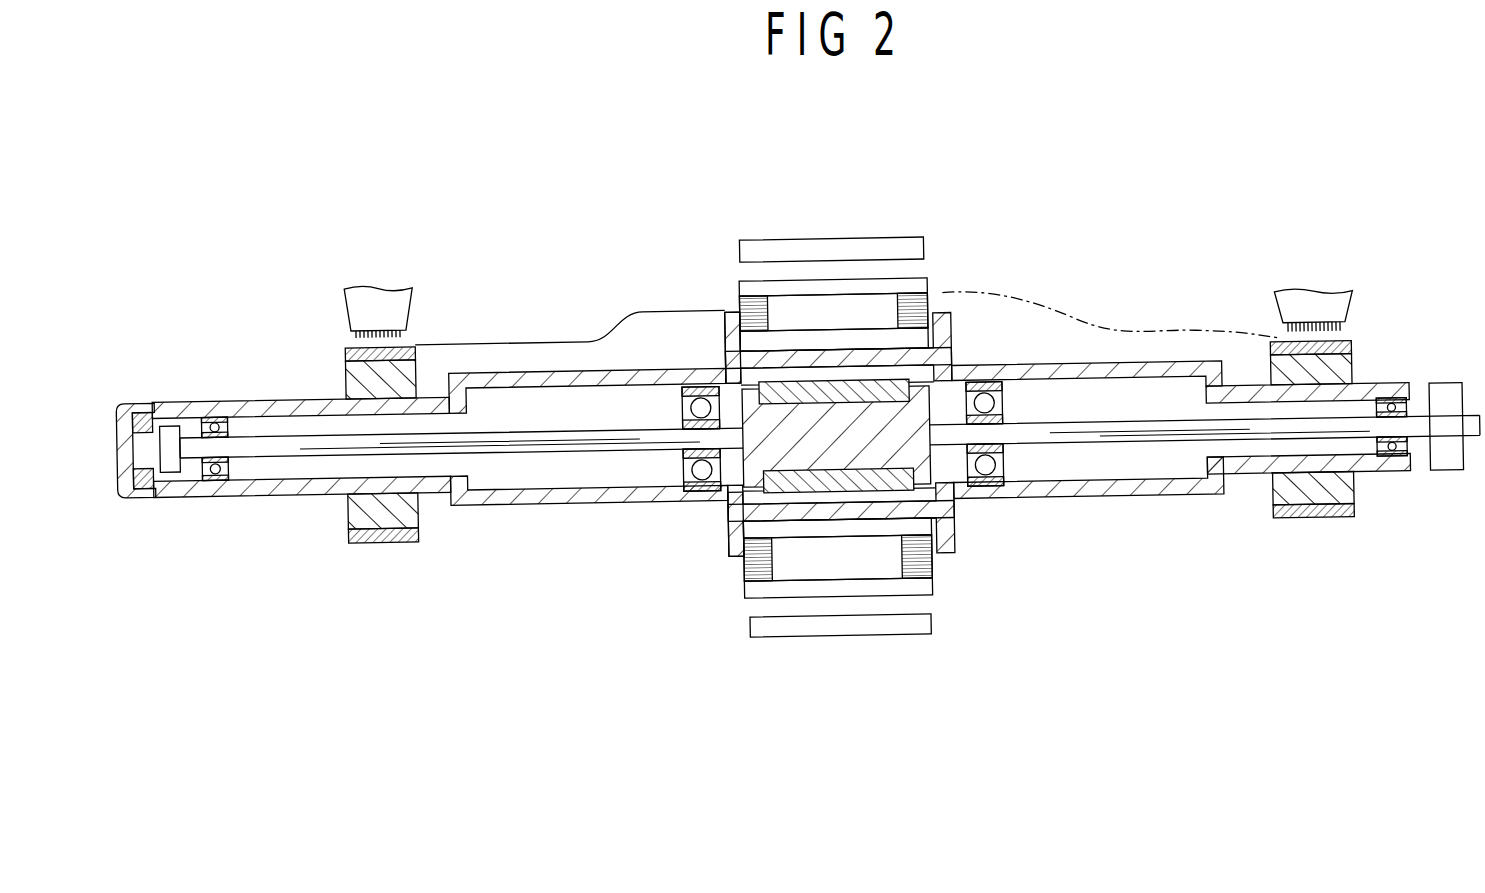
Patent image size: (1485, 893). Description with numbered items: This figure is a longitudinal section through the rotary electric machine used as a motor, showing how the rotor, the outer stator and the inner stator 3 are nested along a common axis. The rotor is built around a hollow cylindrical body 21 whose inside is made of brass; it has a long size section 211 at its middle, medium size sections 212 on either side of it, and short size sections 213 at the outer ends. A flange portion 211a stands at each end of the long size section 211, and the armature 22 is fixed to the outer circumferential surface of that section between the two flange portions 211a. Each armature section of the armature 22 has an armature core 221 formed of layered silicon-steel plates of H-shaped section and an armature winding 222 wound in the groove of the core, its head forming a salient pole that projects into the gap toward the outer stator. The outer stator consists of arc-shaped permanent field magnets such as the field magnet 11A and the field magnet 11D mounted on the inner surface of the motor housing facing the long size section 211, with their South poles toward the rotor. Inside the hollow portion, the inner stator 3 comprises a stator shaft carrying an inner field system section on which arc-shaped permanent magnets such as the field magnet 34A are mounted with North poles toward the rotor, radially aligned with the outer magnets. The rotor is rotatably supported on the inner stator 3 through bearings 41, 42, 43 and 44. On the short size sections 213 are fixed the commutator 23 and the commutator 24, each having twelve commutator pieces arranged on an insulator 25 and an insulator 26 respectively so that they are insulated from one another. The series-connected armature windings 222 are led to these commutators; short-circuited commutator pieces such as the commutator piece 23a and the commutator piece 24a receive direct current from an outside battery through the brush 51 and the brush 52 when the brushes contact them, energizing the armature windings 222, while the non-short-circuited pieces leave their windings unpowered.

The hollow cylindrical body 21 is at (762, 432).
The long size section 211 is at (780, 357).
The flange portion 211a is at (737, 317).
The medium size section 212 is at (550, 500).
The short size section 213 is at (325, 495).
The armature 22 is at (858, 350).
The armature core 221 is at (935, 292).
The armature winding 222 is at (935, 290).
The field magnet 11A is at (897, 236).
The field magnet 11D is at (850, 635).
The commutator 23 is at (365, 390).
The commutator piece 23a is at (405, 345).
The insulator 25 is at (347, 373).
The brush 51 is at (387, 305).
The commutator 24 is at (1334, 377).
The commutator piece 24a is at (1278, 343).
The insulator 26 is at (1350, 365).
The brush 52 is at (1320, 305).
The inner stator 3 is at (1180, 452).
The field magnet 34A is at (902, 398).
The bearing 41 is at (657, 490).
The bearing 42 is at (1000, 497).
The bearing 43 is at (215, 490).
The bearing 44 is at (1407, 480).